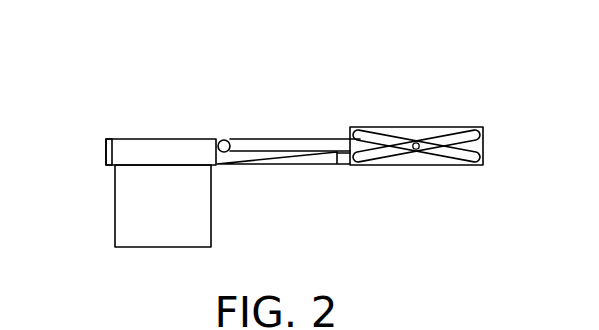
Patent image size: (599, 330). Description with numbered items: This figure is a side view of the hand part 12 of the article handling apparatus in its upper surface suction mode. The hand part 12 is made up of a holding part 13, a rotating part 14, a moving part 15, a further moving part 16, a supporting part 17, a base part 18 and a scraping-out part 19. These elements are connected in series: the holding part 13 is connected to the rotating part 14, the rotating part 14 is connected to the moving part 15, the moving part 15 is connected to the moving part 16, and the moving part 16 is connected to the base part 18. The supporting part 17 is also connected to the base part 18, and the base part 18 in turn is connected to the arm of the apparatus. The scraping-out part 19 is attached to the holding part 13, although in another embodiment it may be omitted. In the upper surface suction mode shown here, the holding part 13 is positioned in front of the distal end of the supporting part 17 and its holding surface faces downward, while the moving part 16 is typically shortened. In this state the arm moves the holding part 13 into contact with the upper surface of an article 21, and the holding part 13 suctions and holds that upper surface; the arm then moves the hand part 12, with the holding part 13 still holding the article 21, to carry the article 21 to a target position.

The hand part 12 is at (422, 84).
The holding part 13 is at (138, 138).
The rotating part 14 is at (224, 139).
The moving part 15 is at (323, 139).
The moving part 16 is at (455, 126).
The supporting part 17 is at (303, 166).
The base part 18 is at (434, 166).
The scraping-out part 19 is at (106, 152).
The article 21 is at (115, 211).